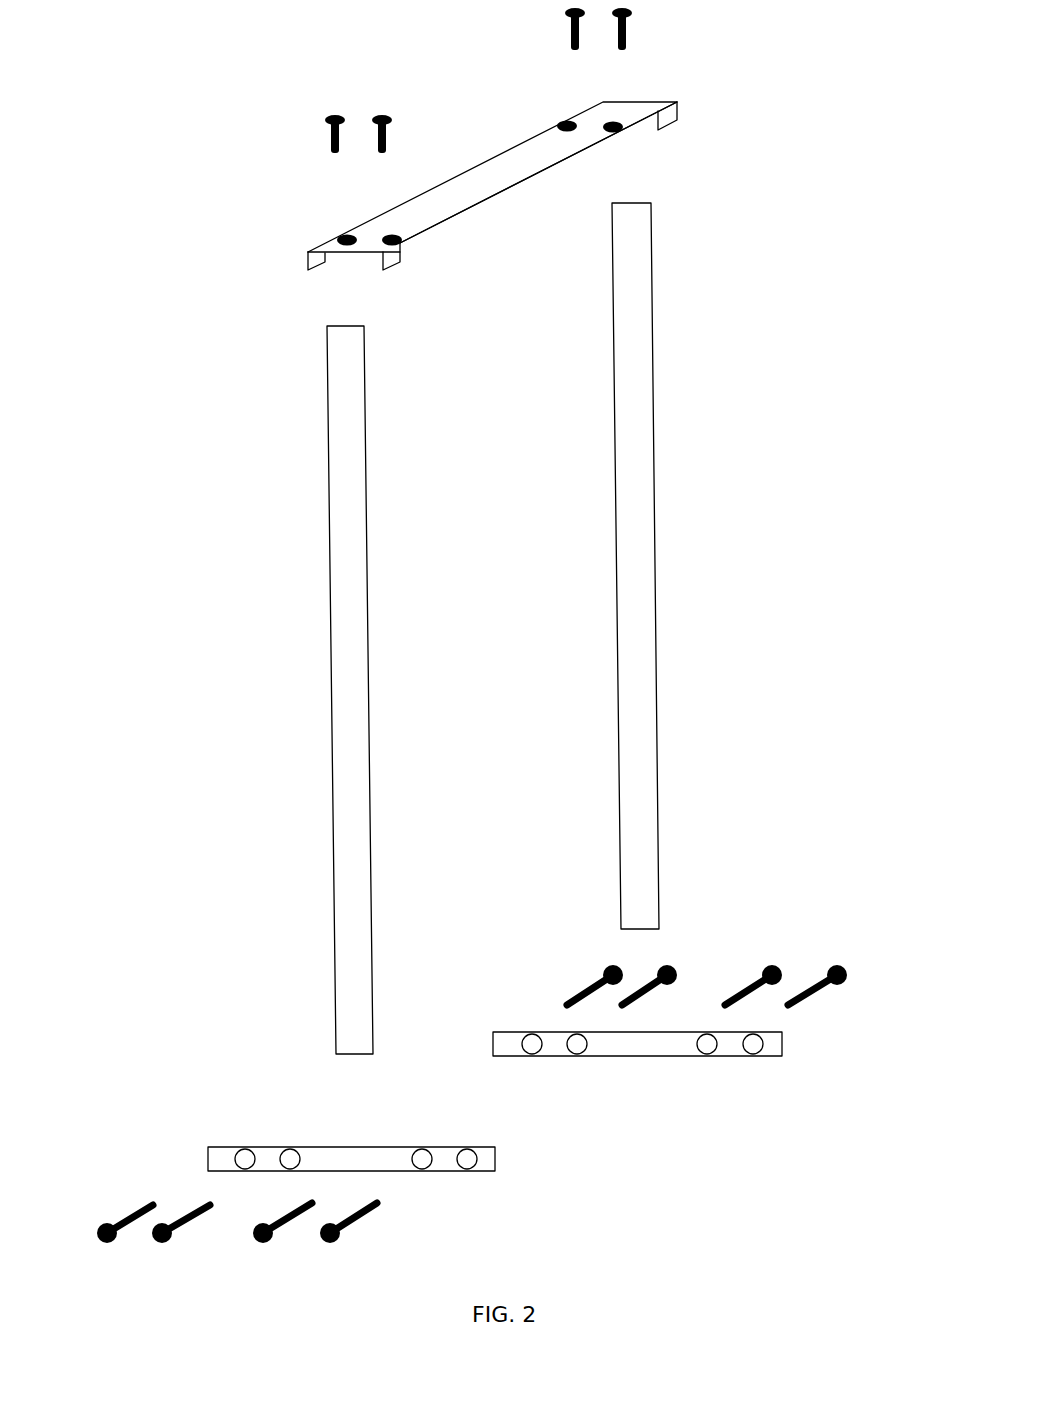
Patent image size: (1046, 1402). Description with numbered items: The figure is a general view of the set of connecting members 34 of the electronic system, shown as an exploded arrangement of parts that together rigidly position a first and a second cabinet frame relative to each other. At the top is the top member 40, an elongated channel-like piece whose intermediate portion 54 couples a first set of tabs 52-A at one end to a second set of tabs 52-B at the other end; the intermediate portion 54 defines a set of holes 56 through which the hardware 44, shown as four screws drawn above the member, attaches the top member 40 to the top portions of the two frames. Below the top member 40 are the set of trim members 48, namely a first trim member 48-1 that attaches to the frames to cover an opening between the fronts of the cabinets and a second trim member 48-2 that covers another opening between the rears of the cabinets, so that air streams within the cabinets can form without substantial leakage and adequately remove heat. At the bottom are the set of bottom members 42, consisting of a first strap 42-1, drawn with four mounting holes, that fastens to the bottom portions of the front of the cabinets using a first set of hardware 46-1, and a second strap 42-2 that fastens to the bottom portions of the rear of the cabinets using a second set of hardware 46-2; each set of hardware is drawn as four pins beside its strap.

The set of connecting members 34 is at (784, 88).
The top member 40 is at (441, 212).
The set of bottom members 42 is at (543, 1097).
The first strap 42-1 is at (495, 1165).
The second strap 42-2 is at (782, 1050).
The hardware 44 is at (534, 37).
The first set of hardware 46-1 is at (110, 1167).
The second set of hardware 46-2 is at (821, 924).
The set of trim members 48 is at (434, 628).
The first trim member 48-1 is at (340, 652).
The second trim member 48-2 is at (627, 583).
The first set of tabs 52-A is at (294, 246).
The second set of tabs 52-B is at (416, 275).
The intermediate portion 54 is at (530, 180).
The set of holes 56 is at (345, 237).